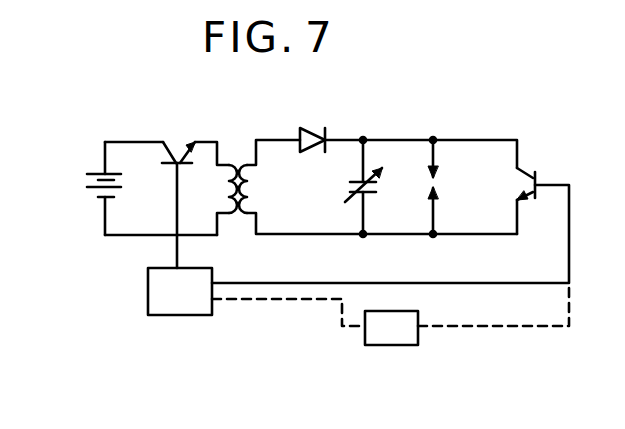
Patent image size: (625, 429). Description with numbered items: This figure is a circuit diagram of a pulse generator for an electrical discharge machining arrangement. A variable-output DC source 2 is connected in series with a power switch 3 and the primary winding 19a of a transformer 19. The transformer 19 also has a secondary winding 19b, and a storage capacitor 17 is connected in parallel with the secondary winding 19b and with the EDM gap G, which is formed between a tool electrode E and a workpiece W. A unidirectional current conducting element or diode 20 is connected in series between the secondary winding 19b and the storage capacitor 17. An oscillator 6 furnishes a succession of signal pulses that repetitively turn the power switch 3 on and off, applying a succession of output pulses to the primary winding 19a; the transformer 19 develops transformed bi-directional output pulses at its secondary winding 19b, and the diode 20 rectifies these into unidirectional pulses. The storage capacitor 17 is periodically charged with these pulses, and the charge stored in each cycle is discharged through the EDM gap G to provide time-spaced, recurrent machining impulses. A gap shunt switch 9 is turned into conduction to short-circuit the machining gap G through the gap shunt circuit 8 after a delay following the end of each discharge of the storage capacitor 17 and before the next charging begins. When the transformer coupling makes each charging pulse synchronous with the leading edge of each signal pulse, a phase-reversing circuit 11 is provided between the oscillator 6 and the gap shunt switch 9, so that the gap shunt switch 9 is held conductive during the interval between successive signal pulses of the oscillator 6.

The DC source 2 is at (85, 186).
The power switch 3 is at (177, 140).
The oscillator 6 is at (146, 276).
The gap shunt circuit 8 is at (466, 156).
The gap shunt switch 9 is at (526, 168).
The phase-reversing circuit 11 is at (365, 338).
The storage capacitor 17 is at (382, 183).
The transformer 19 is at (245, 217).
The primary winding 19a is at (228, 175).
The secondary winding 19b is at (256, 178).
The diode 20 is at (318, 138).
The tool electrode E is at (437, 175).
The EDM gap G is at (438, 182).
The workpiece W is at (438, 190).